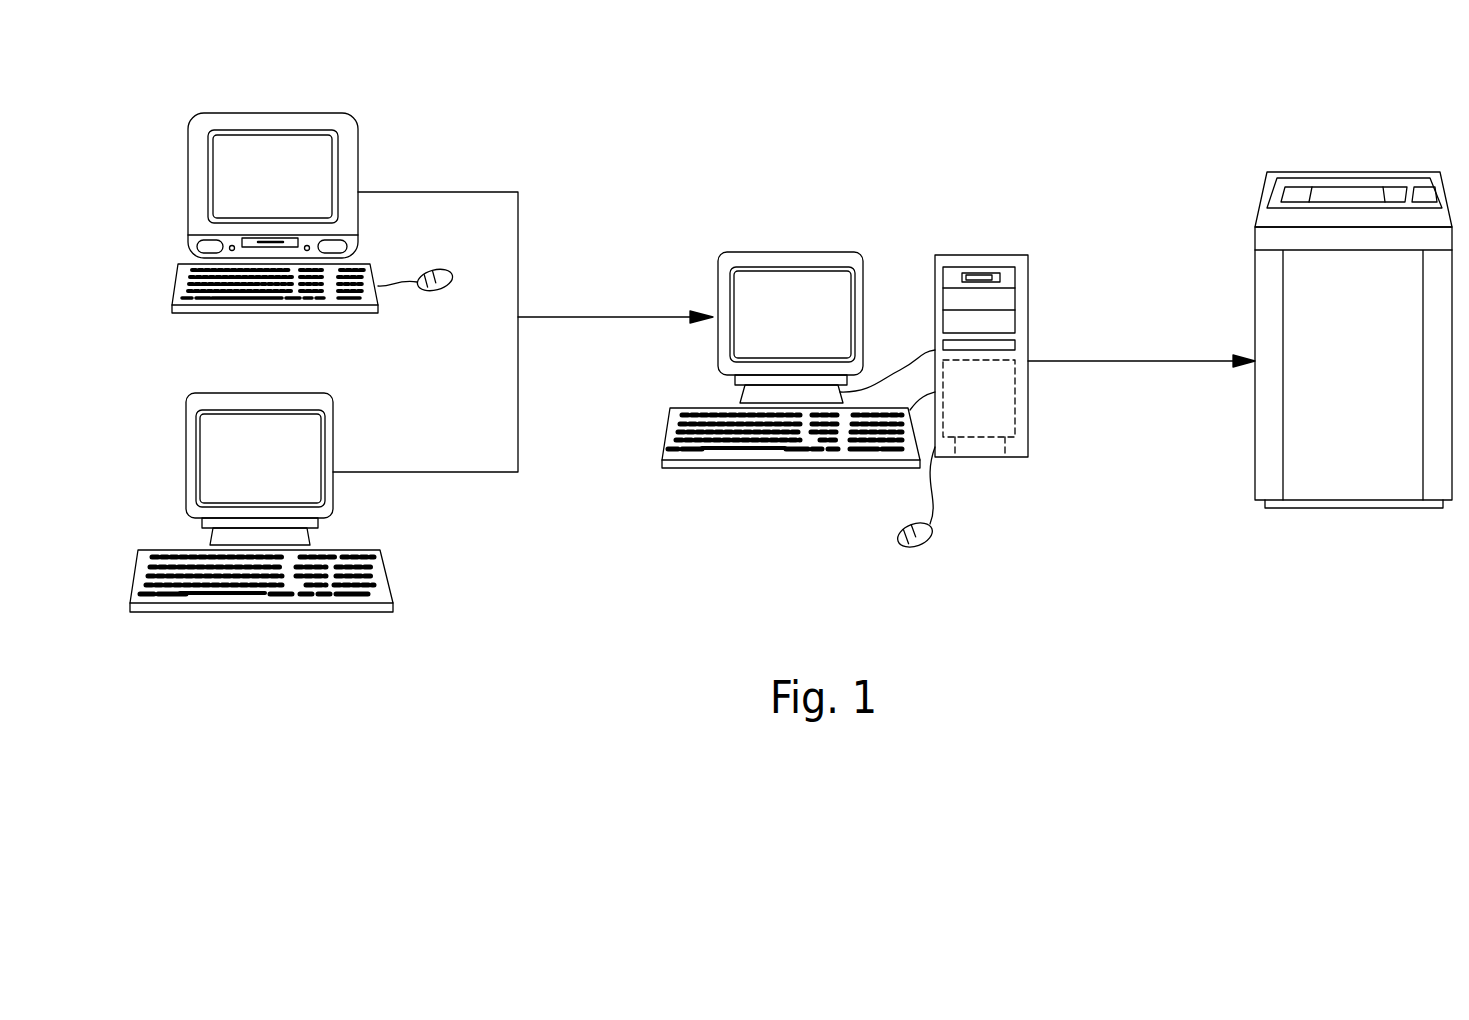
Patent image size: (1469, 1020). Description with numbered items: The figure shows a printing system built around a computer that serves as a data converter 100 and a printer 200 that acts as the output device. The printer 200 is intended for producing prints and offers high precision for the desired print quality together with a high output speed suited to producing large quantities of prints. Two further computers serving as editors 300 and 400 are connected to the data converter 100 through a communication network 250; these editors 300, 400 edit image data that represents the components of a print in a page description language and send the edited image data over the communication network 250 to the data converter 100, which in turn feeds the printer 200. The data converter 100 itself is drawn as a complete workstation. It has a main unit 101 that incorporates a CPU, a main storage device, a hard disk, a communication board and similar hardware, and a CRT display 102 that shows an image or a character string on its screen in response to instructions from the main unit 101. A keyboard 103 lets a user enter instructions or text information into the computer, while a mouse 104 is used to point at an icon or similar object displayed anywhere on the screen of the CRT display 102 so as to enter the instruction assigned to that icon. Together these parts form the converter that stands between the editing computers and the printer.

The data converter 100 is at (897, 232).
The main unit 101 is at (985, 255).
The CRT display 102 is at (777, 252).
The keyboard 103 is at (837, 470).
The mouse 104 is at (905, 548).
The printer 200 is at (1343, 172).
The communication network 250 is at (520, 248).
The editor 300 is at (188, 165).
The editor 400 is at (186, 455).